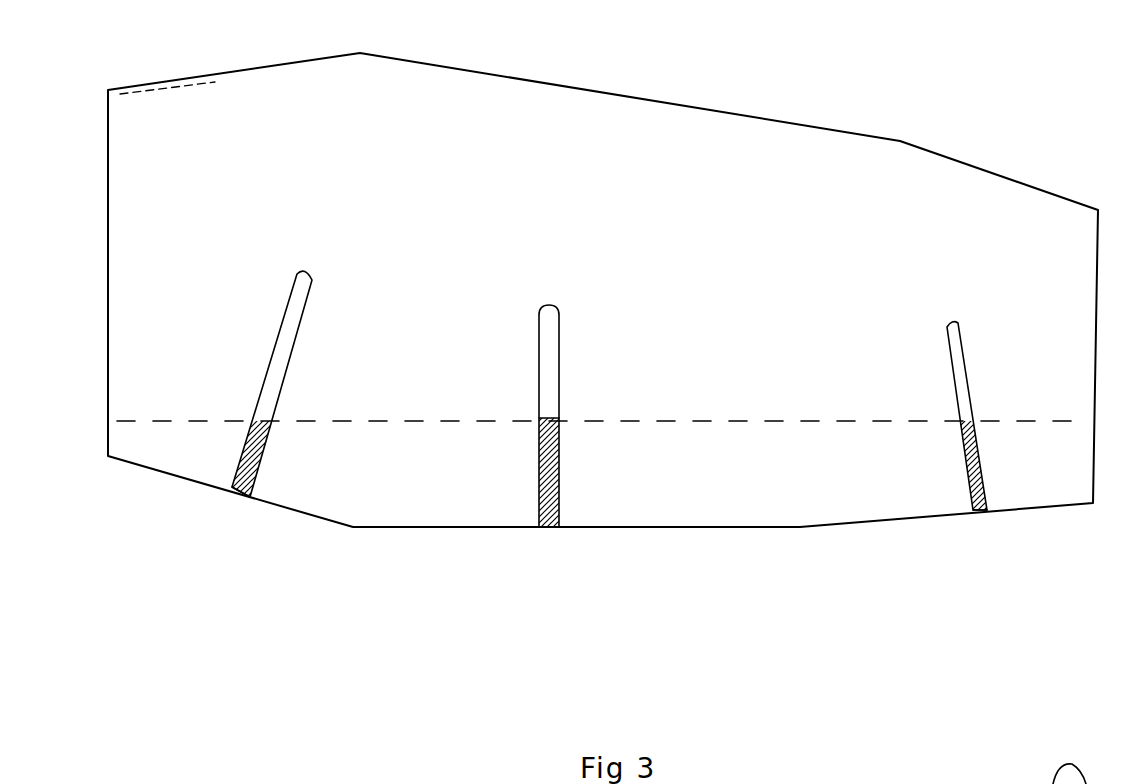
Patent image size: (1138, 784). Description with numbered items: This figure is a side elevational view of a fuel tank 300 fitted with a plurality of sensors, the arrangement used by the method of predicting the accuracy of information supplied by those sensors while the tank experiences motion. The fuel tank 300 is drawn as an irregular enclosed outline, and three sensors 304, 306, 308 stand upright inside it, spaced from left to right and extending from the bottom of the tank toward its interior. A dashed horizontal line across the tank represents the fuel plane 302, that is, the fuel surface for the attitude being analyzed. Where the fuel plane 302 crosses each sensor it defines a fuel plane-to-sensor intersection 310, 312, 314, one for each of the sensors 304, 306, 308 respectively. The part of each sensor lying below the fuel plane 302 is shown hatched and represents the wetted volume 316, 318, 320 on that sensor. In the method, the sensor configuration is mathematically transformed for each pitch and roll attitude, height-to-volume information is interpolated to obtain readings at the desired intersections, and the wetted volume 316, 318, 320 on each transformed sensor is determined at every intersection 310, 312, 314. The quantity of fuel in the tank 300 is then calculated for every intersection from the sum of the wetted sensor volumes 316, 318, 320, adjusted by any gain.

The fuel tank 300 is at (935, 57).
The fuel plane 302 is at (757, 417).
The sensor 304 is at (323, 260).
The sensor 306 is at (562, 283).
The sensor 308 is at (957, 310).
The fuel plane-to-sensor intersection 310 is at (290, 408).
The fuel plane-to-sensor intersection 312 is at (572, 413).
The fuel plane-to-sensor intersection 314 is at (988, 413).
The wetted volume 316 is at (277, 475).
The wetted volume 318 is at (582, 482).
The wetted volume 320 is at (997, 465).